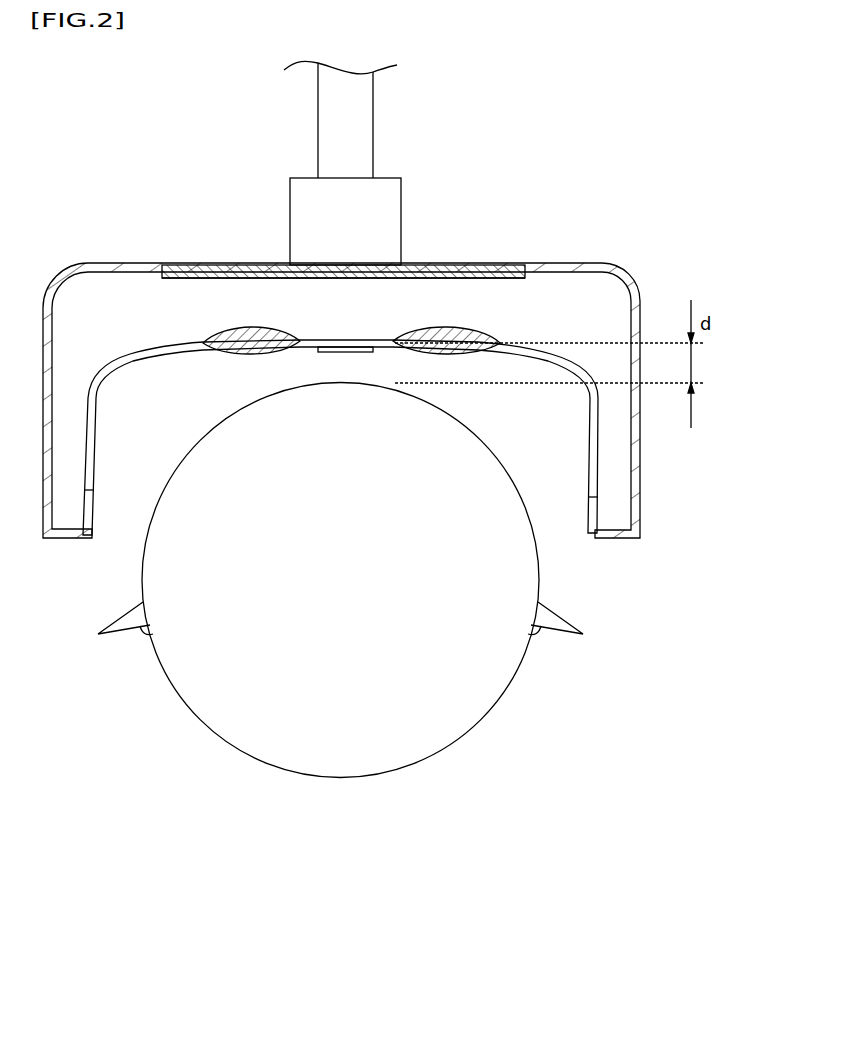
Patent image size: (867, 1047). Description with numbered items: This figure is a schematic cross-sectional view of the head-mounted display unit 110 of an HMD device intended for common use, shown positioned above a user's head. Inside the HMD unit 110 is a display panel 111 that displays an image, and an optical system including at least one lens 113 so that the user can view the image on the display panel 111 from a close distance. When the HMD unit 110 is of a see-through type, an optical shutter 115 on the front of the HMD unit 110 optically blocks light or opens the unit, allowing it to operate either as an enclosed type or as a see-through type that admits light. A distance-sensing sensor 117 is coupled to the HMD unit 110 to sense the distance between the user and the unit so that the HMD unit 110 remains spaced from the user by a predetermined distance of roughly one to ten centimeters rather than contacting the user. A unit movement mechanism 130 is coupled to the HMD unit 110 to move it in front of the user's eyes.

The head-mounted display unit 110 is at (625, 265).
The display panel 111 is at (433, 263).
The lens 113 is at (452, 327).
The optical shutter 115 is at (517, 268).
The distance-sensing sensor 117 is at (94, 508).
The unit movement mechanism 130 is at (332, 109).